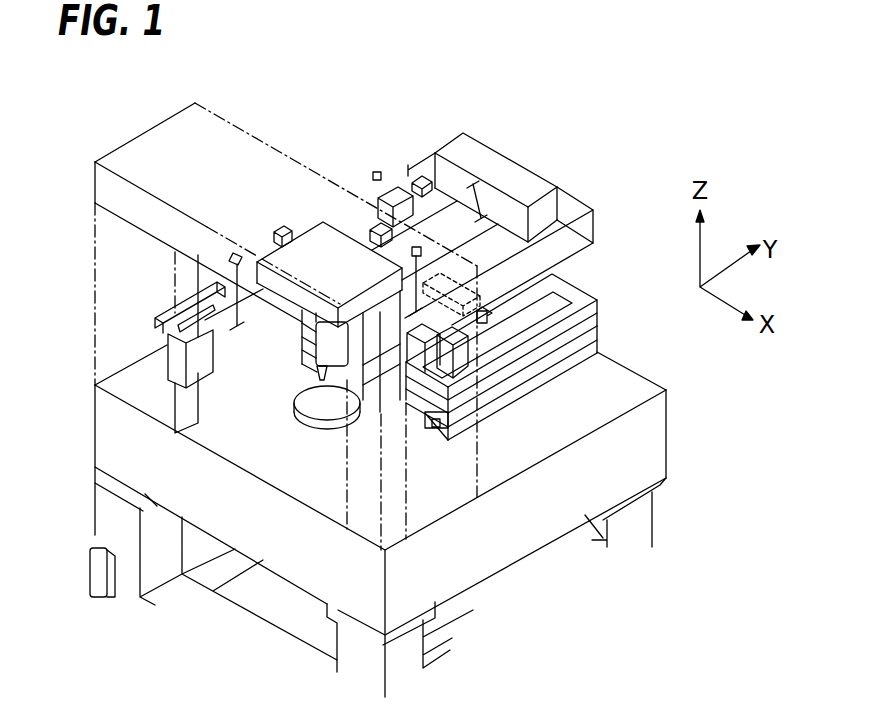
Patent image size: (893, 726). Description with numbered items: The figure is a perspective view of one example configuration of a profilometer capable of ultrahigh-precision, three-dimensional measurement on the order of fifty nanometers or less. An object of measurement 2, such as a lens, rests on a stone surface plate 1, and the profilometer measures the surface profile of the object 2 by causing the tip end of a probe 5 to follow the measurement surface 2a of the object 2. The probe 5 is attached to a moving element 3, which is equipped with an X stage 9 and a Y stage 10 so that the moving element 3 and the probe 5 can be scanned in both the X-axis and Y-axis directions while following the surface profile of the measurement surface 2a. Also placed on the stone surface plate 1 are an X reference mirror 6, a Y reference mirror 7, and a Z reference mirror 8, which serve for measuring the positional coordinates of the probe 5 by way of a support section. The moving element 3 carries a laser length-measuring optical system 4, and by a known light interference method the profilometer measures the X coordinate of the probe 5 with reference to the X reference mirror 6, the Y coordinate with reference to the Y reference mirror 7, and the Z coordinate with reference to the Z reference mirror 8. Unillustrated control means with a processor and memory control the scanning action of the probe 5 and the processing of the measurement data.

The stone surface plate 1 is at (518, 537).
The object of measurement 2 is at (322, 431).
The measurement surface 2a is at (301, 408).
The moving element 3 is at (557, 247).
The laser length-measuring optical system 4 is at (404, 228).
The probe 5 is at (316, 372).
The X reference mirror 6 is at (153, 316).
The Y reference mirror 7 is at (490, 317).
The Z reference mirror 8 is at (270, 262).
The X stage 9 is at (547, 360).
The Y stage 10 is at (525, 385).